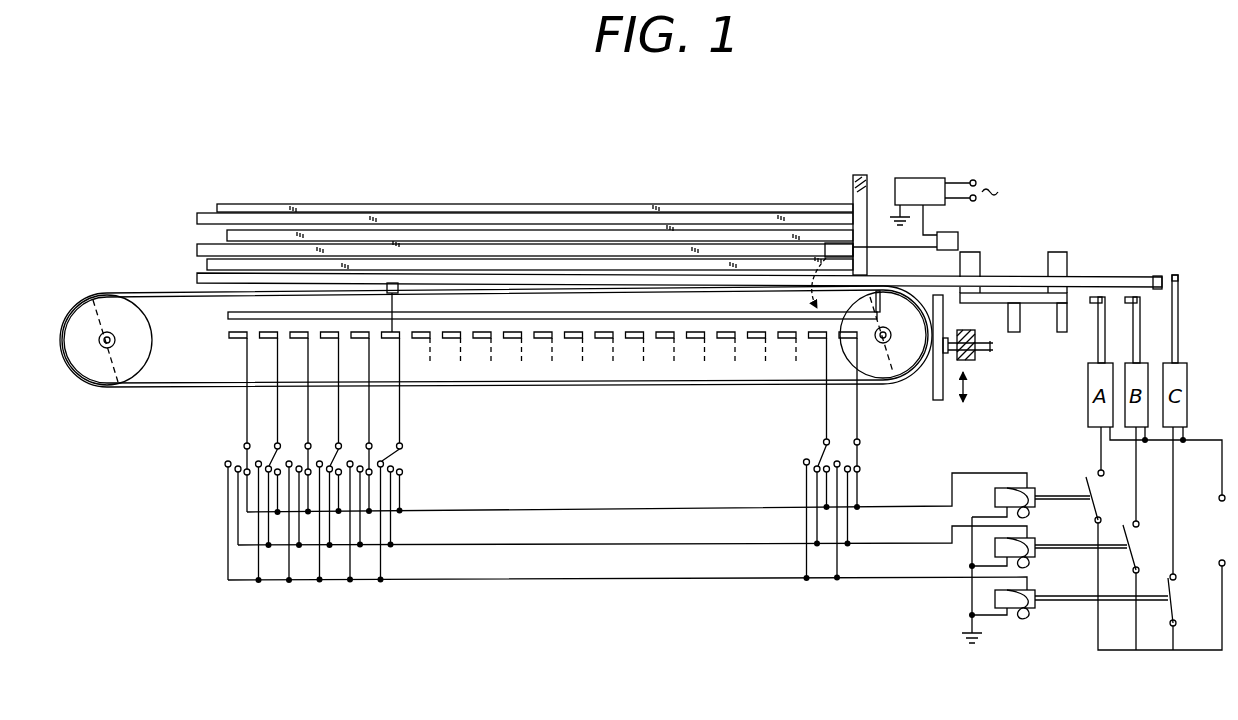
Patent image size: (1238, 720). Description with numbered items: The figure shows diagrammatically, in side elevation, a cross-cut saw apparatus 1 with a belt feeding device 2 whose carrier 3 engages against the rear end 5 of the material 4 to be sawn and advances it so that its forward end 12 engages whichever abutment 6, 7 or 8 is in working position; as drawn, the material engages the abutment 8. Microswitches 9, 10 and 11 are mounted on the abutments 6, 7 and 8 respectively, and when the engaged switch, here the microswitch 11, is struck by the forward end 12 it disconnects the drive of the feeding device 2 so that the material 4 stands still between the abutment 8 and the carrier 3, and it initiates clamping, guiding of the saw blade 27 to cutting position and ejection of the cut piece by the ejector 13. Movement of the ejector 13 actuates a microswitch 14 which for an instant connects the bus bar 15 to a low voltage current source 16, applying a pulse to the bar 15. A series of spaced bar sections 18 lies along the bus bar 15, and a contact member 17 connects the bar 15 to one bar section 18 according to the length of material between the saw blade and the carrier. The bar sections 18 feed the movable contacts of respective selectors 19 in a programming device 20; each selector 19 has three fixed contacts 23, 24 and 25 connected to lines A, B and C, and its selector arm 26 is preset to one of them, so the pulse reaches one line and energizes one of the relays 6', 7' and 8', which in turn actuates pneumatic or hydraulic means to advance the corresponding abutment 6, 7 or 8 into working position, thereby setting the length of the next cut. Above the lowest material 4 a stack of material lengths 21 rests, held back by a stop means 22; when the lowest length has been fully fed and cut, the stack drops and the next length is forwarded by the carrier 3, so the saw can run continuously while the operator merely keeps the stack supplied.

The cross-cut saw apparatus 1 is at (1055, 233).
The belt feeding device 2 is at (88, 287).
The carrier 3 is at (389, 283).
The material 4 is at (1102, 277).
The rear end 5 is at (400, 283).
The abutment 6 is at (1081, 333).
The abutment 7 is at (1175, 330).
The abutment 8 is at (1197, 319).
The microswitch 9 is at (1091, 300).
The microswitch 10 is at (1125, 300).
The microswitch 11 is at (1174, 275).
The forward end 12 is at (1156, 277).
The ejector 13 is at (1030, 293).
The microswitch 14 is at (952, 232).
The bus bar 15 is at (781, 320).
The low voltage current source 16 is at (917, 180).
The contact member 17 is at (393, 306).
The bar sections 18 is at (266, 341).
The selectors 19 is at (380, 447).
The programming device 20 is at (460, 586).
The material lengths 21 is at (545, 228).
The stop means 22 is at (859, 175).
The fixed contact 23 is at (224, 461).
The fixed contact 24 is at (234, 470).
The fixed contact 25 is at (244, 476).
The selector arm 26 is at (365, 456).
The saw blade 27 is at (943, 300).
The relay 6' is at (1038, 478).
The relay 7' is at (1055, 538).
The relay 8' is at (1074, 593).